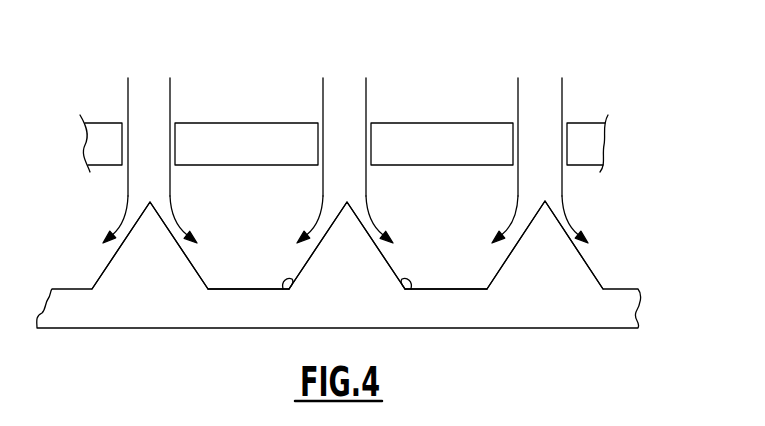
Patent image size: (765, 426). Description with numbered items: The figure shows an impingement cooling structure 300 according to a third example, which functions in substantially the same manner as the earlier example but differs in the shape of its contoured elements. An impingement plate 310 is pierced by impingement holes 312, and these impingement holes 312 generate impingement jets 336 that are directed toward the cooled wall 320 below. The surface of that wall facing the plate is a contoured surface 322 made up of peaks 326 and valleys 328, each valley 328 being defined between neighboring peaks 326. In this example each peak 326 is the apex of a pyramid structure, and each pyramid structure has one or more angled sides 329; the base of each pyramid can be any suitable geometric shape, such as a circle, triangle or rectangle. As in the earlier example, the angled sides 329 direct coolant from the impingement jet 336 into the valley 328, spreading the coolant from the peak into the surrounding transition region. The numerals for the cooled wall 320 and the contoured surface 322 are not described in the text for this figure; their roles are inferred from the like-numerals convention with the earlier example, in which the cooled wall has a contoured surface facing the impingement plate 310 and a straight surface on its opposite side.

The impingement cooling structure 300 is at (596, 58).
The impingement plate 310 is at (234, 133).
The impingement holes 312 is at (368, 124).
The peak 320 is at (545, 202).
The base 322 is at (619, 289).
The peaks 326 is at (150, 203).
The valleys 328 is at (231, 289).
The angled sides 329 is at (282, 290).
The impingement jets 336 is at (141, 186).